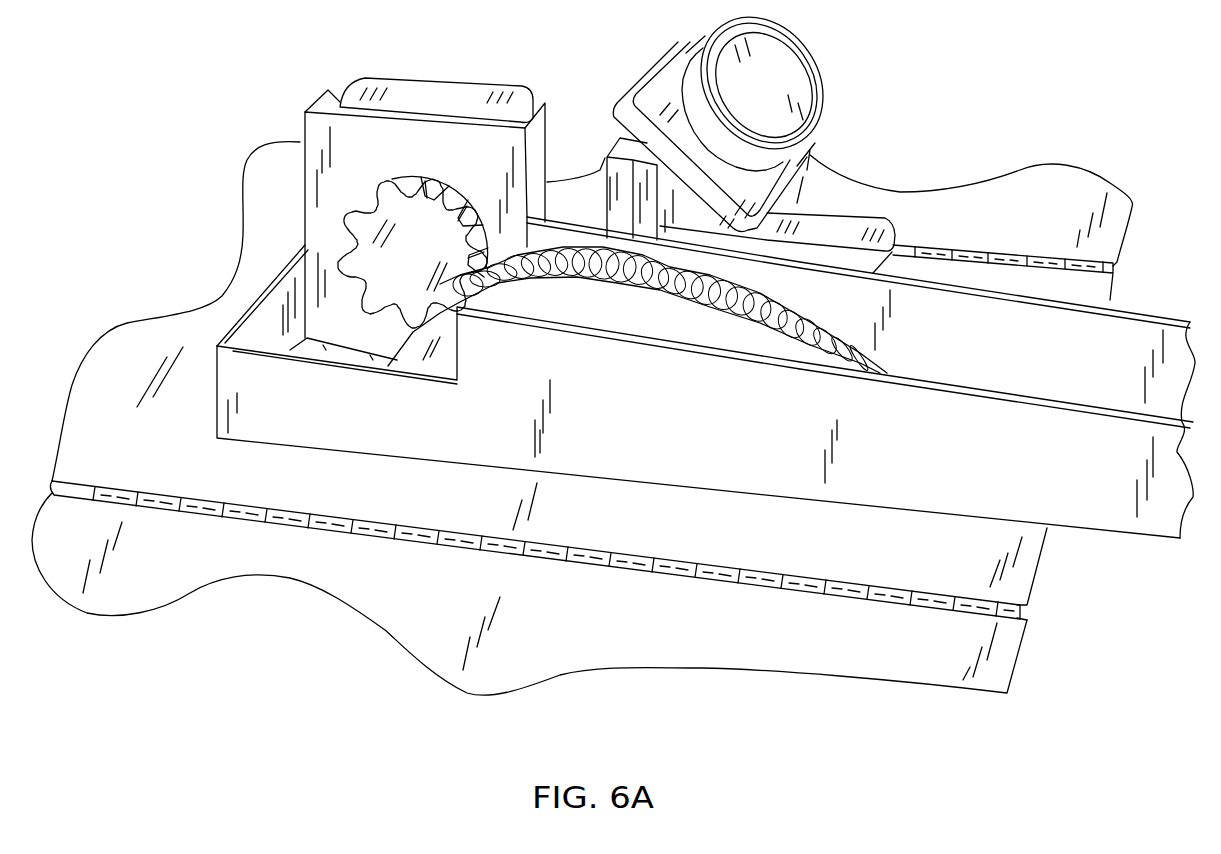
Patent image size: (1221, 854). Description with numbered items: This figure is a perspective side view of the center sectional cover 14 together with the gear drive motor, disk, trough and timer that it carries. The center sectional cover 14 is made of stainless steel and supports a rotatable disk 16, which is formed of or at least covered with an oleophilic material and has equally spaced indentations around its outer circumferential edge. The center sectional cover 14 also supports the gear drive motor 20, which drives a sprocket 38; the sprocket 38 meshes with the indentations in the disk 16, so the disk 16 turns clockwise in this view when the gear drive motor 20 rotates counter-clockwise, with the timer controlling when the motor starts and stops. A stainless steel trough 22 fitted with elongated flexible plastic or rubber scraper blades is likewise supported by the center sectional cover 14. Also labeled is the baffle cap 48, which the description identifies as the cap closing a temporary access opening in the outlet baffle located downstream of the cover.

The center sectional cover 14 is at (628, 626).
The rotatable disk 16 is at (636, 321).
The gear drive motor 20 is at (430, 97).
The trough 22 is at (998, 471).
The sprocket 38 is at (419, 268).
The baffle cap 48 is at (757, 68).